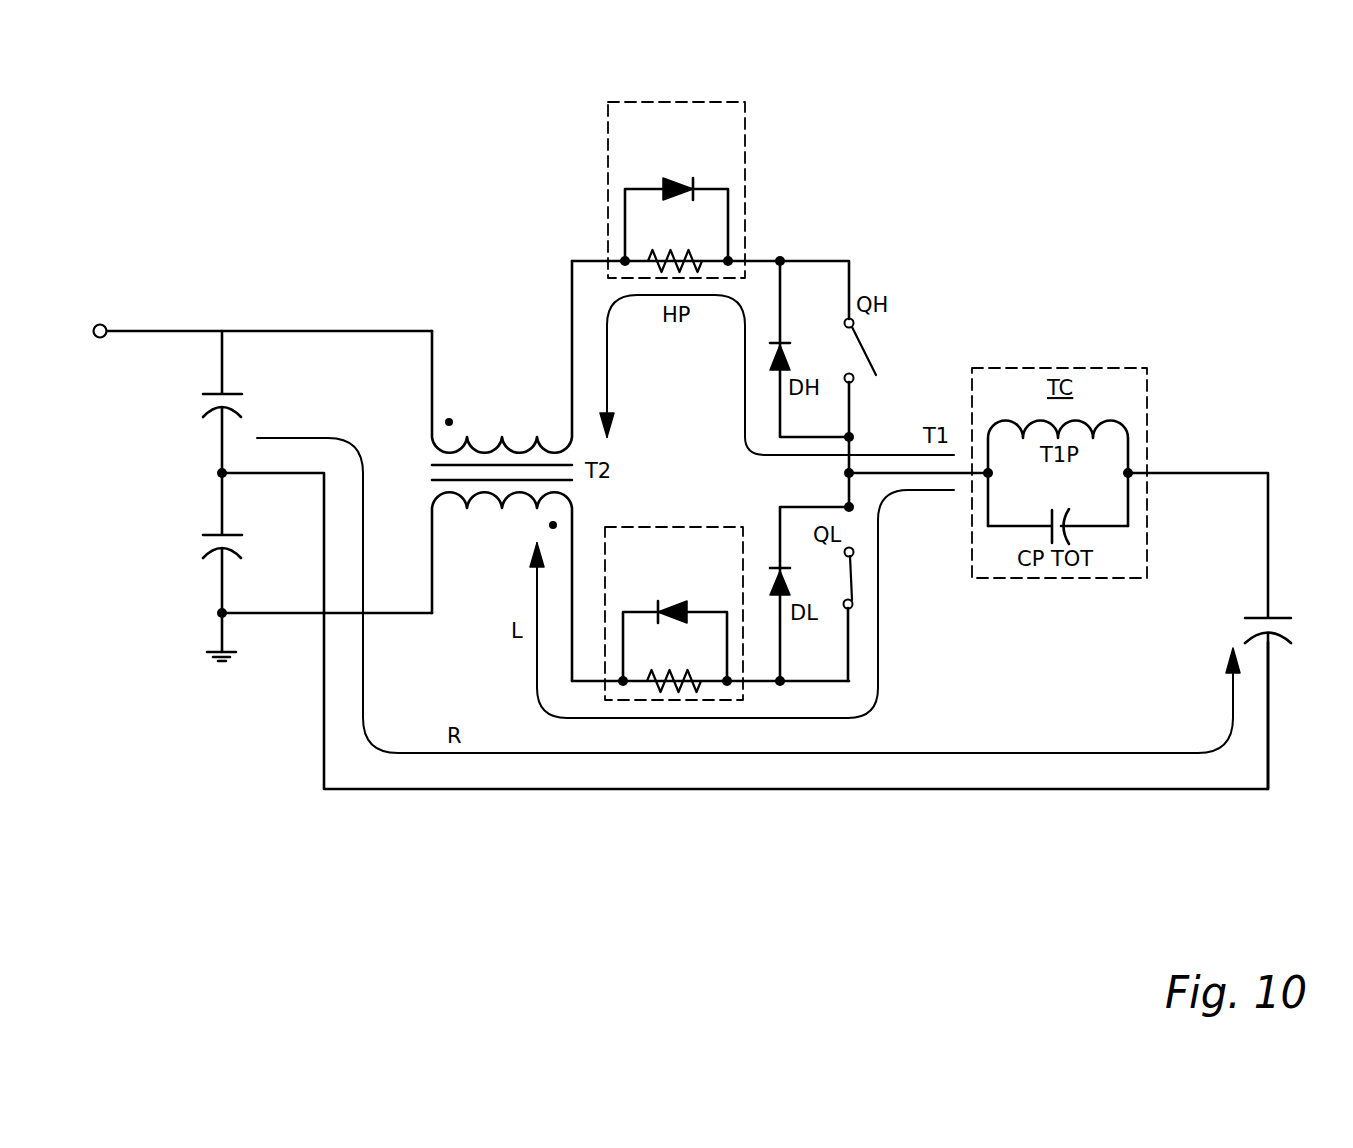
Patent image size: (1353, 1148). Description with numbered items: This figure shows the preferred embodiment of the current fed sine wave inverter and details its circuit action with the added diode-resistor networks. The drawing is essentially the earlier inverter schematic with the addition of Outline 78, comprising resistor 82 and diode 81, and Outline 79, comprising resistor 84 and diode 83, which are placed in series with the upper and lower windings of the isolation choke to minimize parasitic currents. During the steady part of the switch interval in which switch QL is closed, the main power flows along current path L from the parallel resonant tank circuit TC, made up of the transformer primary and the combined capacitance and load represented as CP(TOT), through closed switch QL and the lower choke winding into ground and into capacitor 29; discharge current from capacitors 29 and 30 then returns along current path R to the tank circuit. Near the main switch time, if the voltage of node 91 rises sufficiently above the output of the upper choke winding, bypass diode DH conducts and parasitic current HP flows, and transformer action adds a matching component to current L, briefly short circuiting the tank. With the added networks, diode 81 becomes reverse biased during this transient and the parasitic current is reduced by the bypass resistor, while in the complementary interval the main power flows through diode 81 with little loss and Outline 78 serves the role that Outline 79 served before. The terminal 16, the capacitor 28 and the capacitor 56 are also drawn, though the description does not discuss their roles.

The input terminal 16 is at (263, 343).
The capacitor 28 is at (214, 402).
The capacitor 29 is at (214, 562).
The capacitor 30 is at (727, 625).
The capacitor 56 is at (1216, 631).
The outline 78 is at (676, 190).
The outline 79 is at (674, 613).
The diode 81 is at (676, 206).
The resistor 82 is at (676, 247).
The diode 83 is at (675, 627).
The resistor 84 is at (675, 669).
The node 91 is at (900, 473).